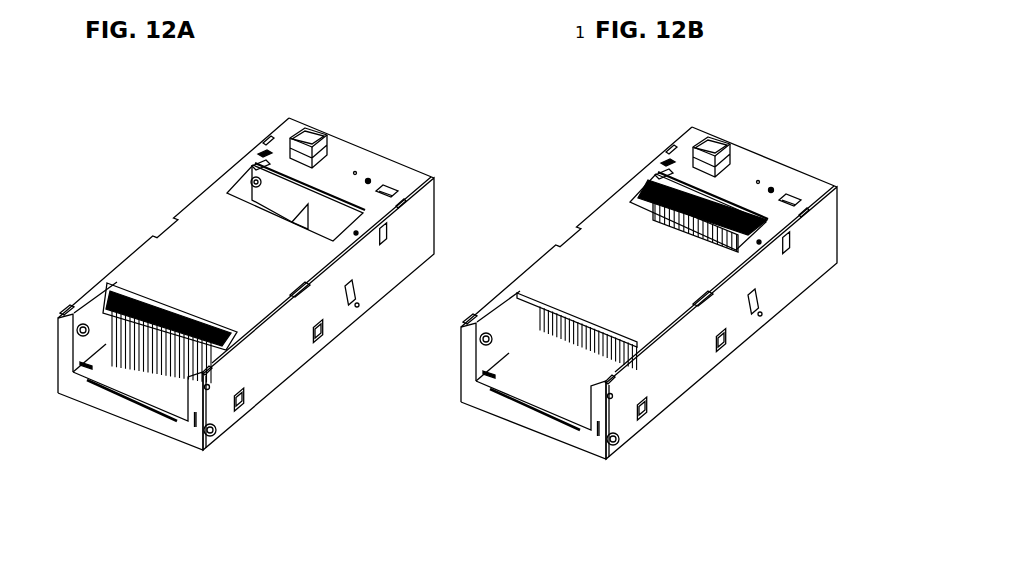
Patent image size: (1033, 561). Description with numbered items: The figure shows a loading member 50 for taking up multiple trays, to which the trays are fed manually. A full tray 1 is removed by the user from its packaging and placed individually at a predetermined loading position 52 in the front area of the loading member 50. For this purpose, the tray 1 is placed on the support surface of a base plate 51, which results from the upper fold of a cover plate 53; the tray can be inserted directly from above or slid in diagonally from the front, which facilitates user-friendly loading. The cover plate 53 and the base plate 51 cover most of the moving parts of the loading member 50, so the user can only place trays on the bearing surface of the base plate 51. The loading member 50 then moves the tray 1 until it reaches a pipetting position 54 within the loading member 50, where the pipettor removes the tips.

In FIG. 12A, the tray 1 is at (138, 318).
In FIG. 12A, the loading member 50 is at (435, 217).
In FIG. 12B, the loading member 50 is at (490, 201).
In FIG. 12A, the base plate 51 is at (155, 392).
In FIG. 12A, the loading position 52 is at (97, 277).
In FIG. 12A, the cover plate 53 is at (253, 287).
In FIG. 12B, the pipetting position 54 is at (638, 180).